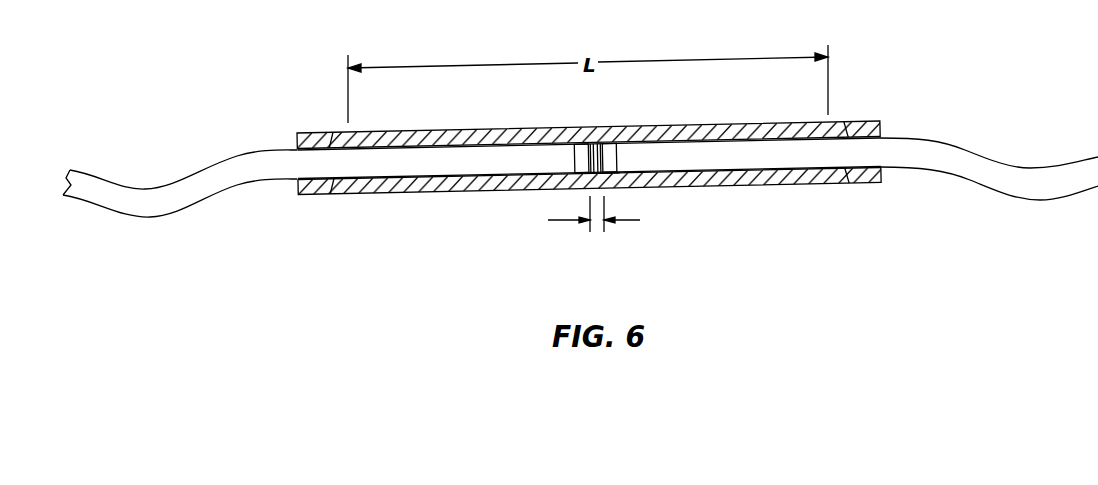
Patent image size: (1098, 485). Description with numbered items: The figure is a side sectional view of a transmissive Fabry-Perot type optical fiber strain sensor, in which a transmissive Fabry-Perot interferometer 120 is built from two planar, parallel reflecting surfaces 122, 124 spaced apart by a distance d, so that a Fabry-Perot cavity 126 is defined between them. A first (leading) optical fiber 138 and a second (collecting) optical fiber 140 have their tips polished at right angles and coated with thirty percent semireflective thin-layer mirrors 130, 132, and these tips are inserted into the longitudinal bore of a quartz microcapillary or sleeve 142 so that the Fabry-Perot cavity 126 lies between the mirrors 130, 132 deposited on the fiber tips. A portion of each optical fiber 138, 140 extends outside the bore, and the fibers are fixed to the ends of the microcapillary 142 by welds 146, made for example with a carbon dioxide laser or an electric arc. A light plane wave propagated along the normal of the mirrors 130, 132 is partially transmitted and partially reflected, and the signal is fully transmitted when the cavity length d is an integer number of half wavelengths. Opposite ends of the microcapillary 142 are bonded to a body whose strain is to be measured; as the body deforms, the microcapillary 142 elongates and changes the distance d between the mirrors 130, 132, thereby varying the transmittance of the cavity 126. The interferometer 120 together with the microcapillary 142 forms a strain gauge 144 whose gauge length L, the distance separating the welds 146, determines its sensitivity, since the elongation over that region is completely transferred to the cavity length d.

The transmissive Fabry-Perot interferometer 120 is at (624, 158).
The reflecting surface 122 is at (607, 190).
The reflecting surface 124 is at (585, 185).
The Fabry-Perot cavity 126 is at (603, 135).
The mirror 130 is at (620, 135).
The mirror 132 is at (569, 140).
The first (leading) optical fiber 138 is at (957, 142).
The second (collecting) optical fiber 140 is at (240, 153).
The microcapillary or sleeve 142 is at (772, 186).
The strain gauge 144 is at (503, 203).
The welds 146 is at (350, 186).